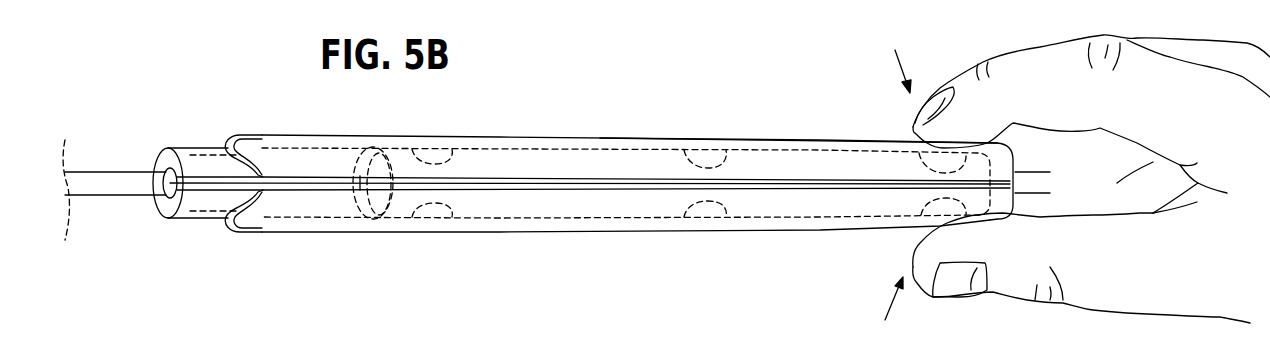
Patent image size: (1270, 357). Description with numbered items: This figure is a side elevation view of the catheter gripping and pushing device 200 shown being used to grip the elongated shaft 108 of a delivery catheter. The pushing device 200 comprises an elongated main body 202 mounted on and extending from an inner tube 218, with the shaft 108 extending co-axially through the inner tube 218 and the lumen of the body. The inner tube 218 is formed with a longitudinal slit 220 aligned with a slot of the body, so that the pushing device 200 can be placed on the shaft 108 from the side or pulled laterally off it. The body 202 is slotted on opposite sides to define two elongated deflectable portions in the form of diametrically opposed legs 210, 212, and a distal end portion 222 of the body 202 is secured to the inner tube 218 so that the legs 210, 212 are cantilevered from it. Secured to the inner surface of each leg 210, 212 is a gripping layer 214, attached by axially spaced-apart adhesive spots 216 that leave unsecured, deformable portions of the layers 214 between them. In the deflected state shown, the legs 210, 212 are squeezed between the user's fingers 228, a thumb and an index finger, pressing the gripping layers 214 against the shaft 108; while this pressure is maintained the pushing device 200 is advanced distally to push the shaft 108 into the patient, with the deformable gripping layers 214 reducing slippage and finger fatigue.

The elongated shaft 108 is at (97, 171).
The pushing device 200 is at (768, 273).
The elongated main body 202 is at (762, 138).
The leg 210 is at (833, 140).
The leg 212 is at (805, 231).
The gripping layer 214 is at (547, 162).
The adhesive spots 216 is at (448, 152).
The inner tube 218 is at (182, 149).
The longitudinal slit 220 is at (207, 187).
The distal end portion 222 is at (270, 134).
The fingers 228 is at (973, 72).